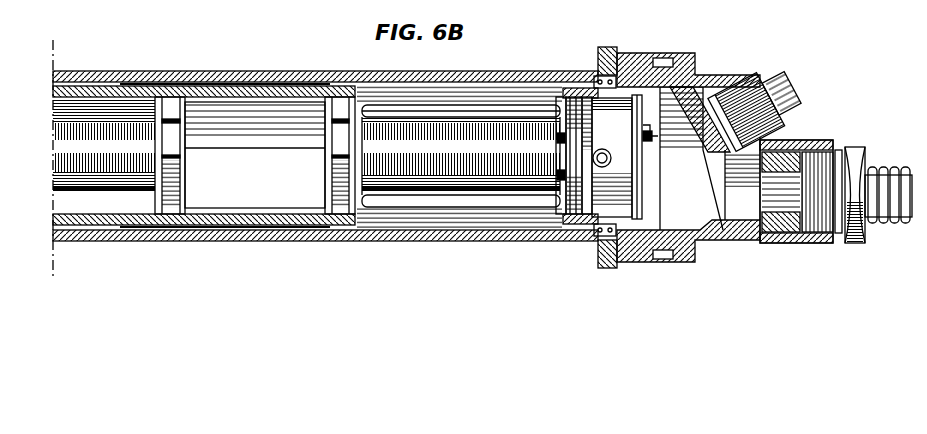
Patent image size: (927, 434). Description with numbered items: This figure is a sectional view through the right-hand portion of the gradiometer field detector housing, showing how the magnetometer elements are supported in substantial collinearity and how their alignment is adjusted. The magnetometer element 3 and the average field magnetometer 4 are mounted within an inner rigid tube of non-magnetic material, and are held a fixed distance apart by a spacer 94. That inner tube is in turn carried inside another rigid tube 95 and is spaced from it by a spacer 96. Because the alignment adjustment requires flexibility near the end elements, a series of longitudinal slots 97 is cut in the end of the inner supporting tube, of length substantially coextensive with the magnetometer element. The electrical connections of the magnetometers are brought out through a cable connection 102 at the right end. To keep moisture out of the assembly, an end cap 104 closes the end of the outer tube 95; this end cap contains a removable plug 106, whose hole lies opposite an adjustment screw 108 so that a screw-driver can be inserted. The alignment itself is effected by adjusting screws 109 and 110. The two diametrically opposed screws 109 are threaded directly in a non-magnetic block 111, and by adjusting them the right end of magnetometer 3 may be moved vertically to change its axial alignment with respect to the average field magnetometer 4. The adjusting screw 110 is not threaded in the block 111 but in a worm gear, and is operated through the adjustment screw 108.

The magnetometer element 3 is at (421, 200).
The average field magnetometer 4 is at (108, 204).
The spacer 94 is at (263, 99).
The outer rigid tube 95 is at (190, 72).
The spacer 96 is at (302, 82).
The longitudinal slot 97 is at (416, 96).
The cable connection 102 is at (885, 168).
The end cap 104 is at (703, 80).
The plug 106 is at (790, 90).
The adjustment screw 108 is at (651, 141).
The adjusting screw 109 is at (600, 72).
The adjusting screw 110 is at (603, 152).
The non-magnetic block 111 is at (618, 107).